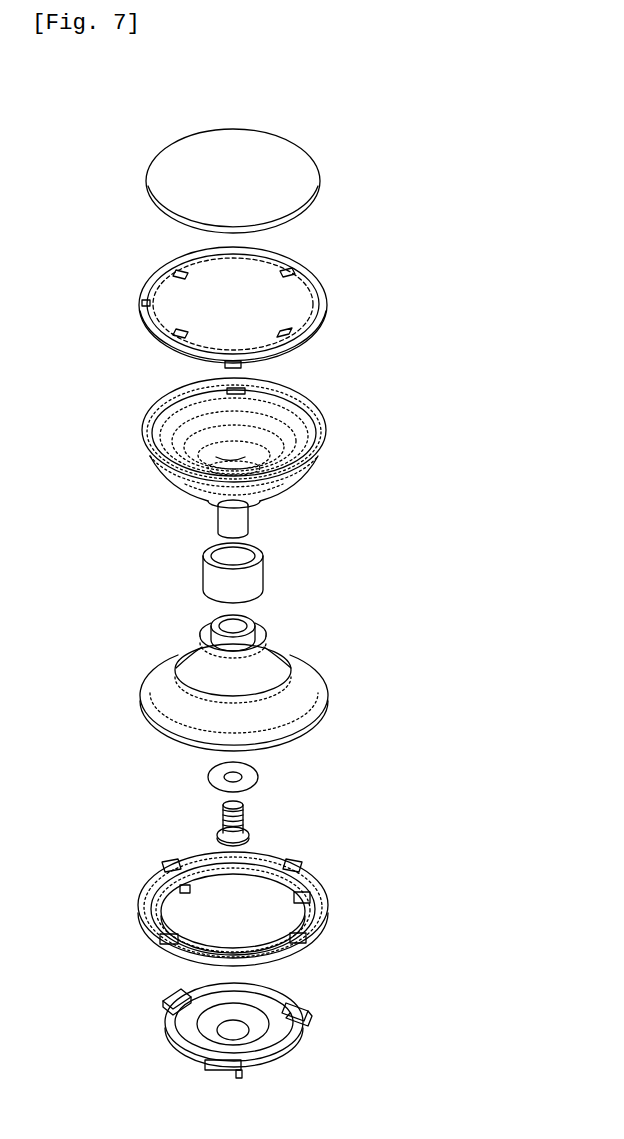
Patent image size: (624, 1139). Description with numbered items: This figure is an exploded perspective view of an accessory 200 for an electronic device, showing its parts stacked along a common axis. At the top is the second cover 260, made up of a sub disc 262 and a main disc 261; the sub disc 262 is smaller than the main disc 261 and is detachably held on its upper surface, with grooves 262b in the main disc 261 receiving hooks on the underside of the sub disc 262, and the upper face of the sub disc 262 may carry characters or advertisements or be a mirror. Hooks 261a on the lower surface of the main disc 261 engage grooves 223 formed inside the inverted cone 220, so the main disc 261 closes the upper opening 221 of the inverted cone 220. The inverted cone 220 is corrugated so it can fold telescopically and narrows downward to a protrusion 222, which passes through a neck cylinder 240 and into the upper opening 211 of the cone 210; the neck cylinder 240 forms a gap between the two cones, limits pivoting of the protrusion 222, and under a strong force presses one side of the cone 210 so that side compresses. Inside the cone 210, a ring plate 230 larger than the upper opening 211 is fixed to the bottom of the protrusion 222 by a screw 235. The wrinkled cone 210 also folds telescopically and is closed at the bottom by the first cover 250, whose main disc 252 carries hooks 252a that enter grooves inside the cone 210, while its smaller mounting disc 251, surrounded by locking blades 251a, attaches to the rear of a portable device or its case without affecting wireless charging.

The accessory for an electronic device 200 is at (138, 120).
The second cover 260 is at (450, 212).
The sub disc 262 is at (290, 205).
The main disc 261 is at (300, 270).
The grooves 262b is at (178, 272).
The hooks 261a is at (230, 365).
The inverted cone 220 is at (252, 505).
The grooves 223 is at (244, 392).
The upper opening 221 is at (226, 458).
The protrusion 222 is at (228, 522).
The neck cylinder 240 is at (252, 582).
The cone 210 is at (300, 688).
The upper opening 211 is at (222, 622).
The ring plate 230 is at (252, 777).
The screw 235 is at (220, 826).
The first cover 250 is at (437, 938).
The main disc 252 is at (312, 930).
The hooks 252a is at (165, 945).
The mounting disc 251 is at (305, 1012).
The locking blades 251a is at (205, 1062).